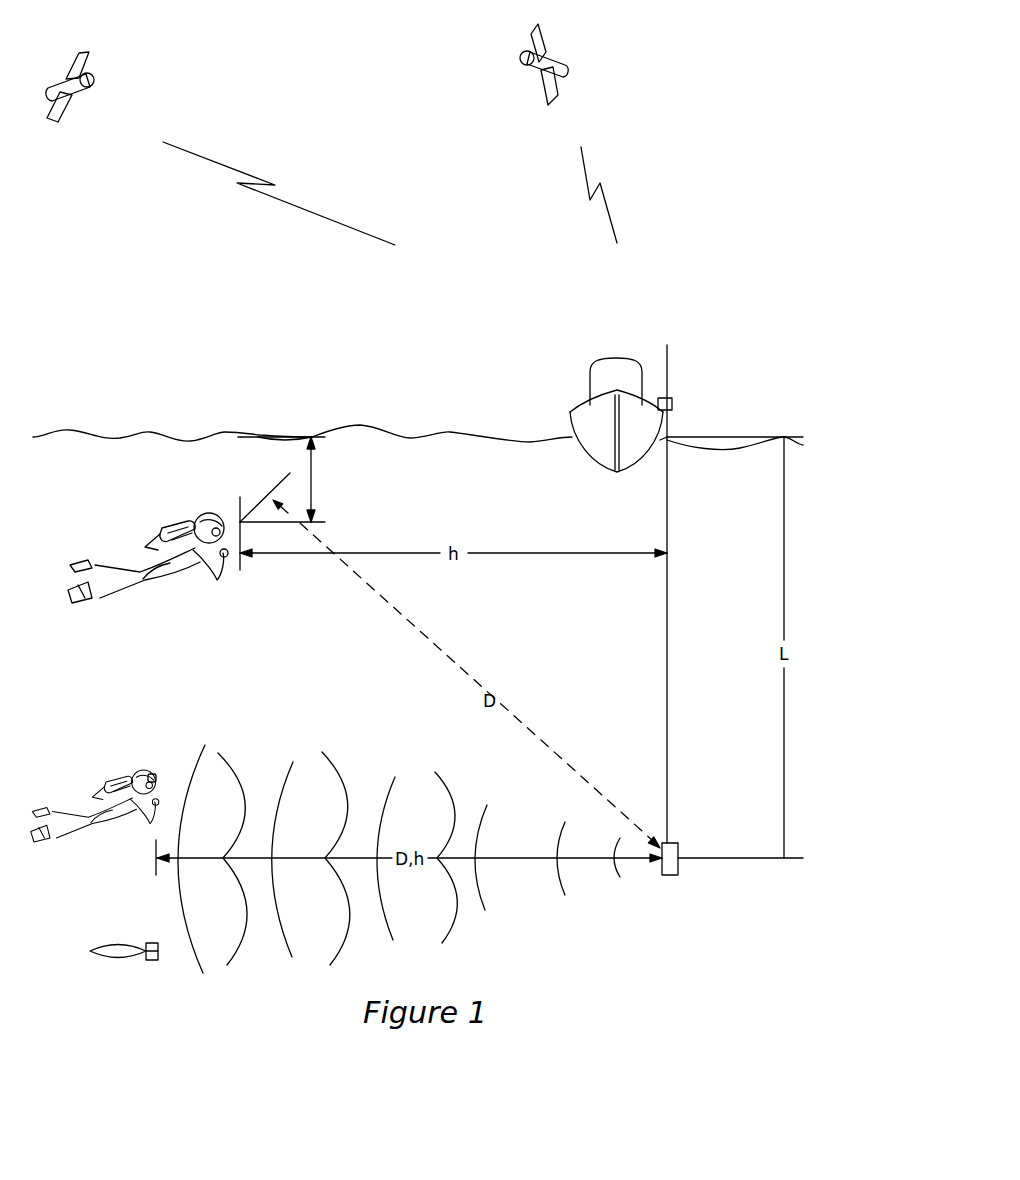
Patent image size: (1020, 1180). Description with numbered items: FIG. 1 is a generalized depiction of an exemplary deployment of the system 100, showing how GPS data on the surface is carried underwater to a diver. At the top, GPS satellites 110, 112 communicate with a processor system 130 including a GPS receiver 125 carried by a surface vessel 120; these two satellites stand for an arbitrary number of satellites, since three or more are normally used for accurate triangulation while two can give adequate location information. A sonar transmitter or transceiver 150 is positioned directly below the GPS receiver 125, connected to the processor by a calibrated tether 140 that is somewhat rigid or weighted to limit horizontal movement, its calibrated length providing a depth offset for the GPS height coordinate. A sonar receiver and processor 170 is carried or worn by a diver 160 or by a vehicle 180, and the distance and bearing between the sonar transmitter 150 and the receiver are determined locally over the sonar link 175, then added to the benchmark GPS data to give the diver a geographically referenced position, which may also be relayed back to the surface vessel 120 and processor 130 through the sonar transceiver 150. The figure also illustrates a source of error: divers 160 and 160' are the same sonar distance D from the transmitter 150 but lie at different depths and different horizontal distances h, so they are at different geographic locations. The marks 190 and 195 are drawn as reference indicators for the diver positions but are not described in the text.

The system 100 is at (637, 51).
The GPS satellite 110 is at (95, 80).
The GPS satellite 112 is at (569, 71).
The surface vessel 120 is at (577, 407).
The GPS receiver 125 is at (668, 380).
The processor system 130 is at (673, 402).
The calibrated tether 140 is at (668, 665).
The sonar transmitter or transceiver 150 is at (679, 853).
The diver 160 is at (95, 792).
The diver 160' is at (148, 551).
The sonar receiver and processor 170 is at (155, 780).
The sonar link 175 is at (413, 778).
The vehicle 180 is at (110, 947).
The reference position 190 is at (155, 857).
The reference structure 195 is at (240, 497).